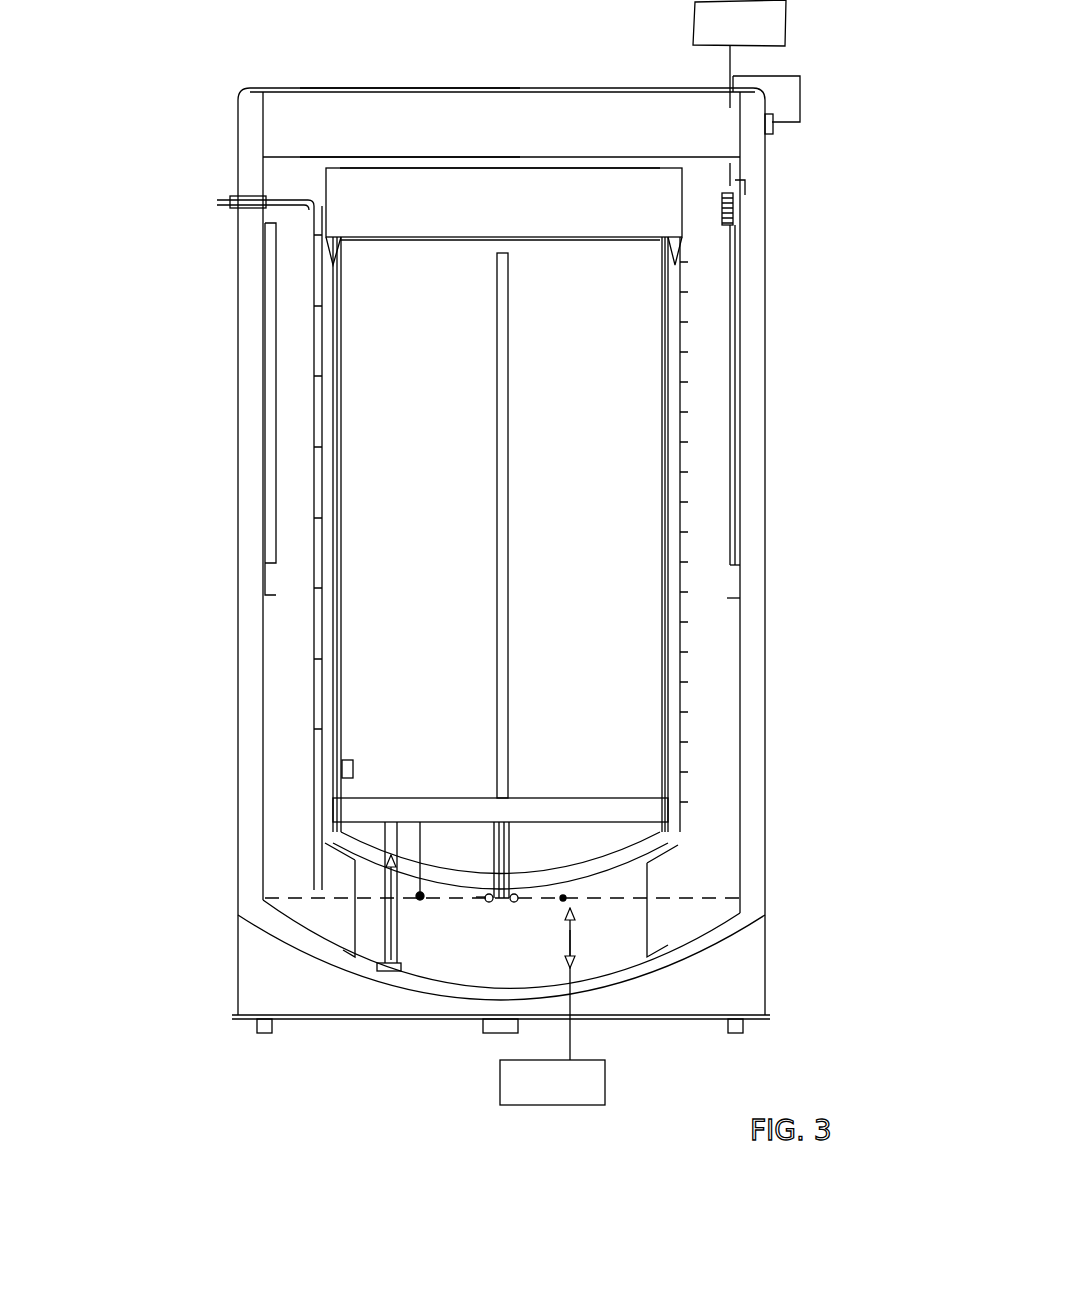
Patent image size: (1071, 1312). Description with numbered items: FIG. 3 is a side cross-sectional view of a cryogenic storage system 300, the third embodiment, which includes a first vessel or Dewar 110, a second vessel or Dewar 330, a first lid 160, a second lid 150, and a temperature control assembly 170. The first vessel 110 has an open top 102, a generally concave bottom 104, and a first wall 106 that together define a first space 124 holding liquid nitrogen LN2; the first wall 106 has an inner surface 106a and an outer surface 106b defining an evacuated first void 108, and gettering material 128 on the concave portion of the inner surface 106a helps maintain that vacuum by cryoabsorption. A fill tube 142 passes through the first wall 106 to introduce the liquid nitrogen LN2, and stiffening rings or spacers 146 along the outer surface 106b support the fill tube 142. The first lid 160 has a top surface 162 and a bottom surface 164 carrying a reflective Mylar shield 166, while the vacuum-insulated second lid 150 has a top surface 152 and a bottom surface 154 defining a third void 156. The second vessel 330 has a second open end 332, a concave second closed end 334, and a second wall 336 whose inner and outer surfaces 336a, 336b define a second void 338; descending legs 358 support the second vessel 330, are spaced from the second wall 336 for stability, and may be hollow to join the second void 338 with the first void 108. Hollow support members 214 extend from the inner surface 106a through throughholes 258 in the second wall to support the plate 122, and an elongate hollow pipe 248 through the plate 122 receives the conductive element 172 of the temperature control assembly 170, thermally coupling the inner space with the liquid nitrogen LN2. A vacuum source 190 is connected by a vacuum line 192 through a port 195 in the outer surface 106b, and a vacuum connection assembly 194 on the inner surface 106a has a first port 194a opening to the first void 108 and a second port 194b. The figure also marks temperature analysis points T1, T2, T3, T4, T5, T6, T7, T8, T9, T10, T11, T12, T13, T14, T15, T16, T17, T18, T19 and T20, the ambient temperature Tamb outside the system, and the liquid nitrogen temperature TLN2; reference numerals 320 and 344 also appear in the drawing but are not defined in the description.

The cryogenic storage system 300 is at (138, 63).
The first open end 102 is at (715, 172).
The first closed end 104 is at (398, 986).
The first wall 106 is at (752, 545).
The inner surface 106a is at (745, 566).
The outer surface 106b is at (765, 516).
The first void 108 is at (755, 598).
The first vessel 110 is at (782, 470).
The plate 122 is at (530, 820).
The first space 124 is at (700, 455).
The gettering material 128 is at (458, 987).
The fill tube 142 is at (234, 196).
The stiffening rings or spacers 146 is at (322, 616).
The second lid 150 is at (492, 211).
The top surface 152 is at (376, 170).
The bottom surface 154 is at (376, 237).
The third void 156 is at (468, 240).
The first lid 160 is at (486, 136).
The top surface 162 is at (316, 88).
The bottom surface 164 is at (306, 157).
The reflective Mylar shield 166 is at (300, 160).
The temperature control assembly 170 is at (348, 756).
The conductive element 172 is at (433, 891).
The vacuum source 190 is at (752, 30).
The vacuum line 192 is at (796, 76).
The vacuum connection assembly 194 is at (737, 216).
The first port 194a is at (746, 189).
The second port 194b is at (742, 280).
The port 195 is at (773, 132).
The support members 214 is at (400, 931).
The elongate hollow pipe 248 is at (510, 508).
The throughholes 258 is at (506, 906).
The storage can wall 320 is at (345, 449).
The second vessel 330 is at (690, 385).
The second open end 332 is at (598, 250).
The second closed end 334 is at (650, 836).
The second wall 336 is at (670, 661).
The inner surface 336a is at (682, 640).
The outer surface 336b is at (668, 677).
The second void 338 is at (683, 700).
The can interior space 344 is at (640, 776).
The descending legs 358 is at (356, 919).
The liquid nitrogen LN2 is at (712, 915).
The liquid nitrogen temperature TLN2 is at (552, 1006).
The ambient temperature Tamb is at (505, 86).
The temperature analysis point T1 is at (633, 155).
The temperature analysis point T2 is at (261, 235).
The temperature analysis point T3 is at (632, 240).
The temperature analysis point T4 is at (383, 796).
The temperature analysis point T5 is at (420, 892).
The temperature analysis point T6 is at (322, 235).
The temperature analysis point T7 is at (322, 306).
The temperature analysis point T8 is at (261, 306).
The temperature analysis point T9 is at (322, 376).
The temperature analysis point T10 is at (261, 376).
The temperature analysis point T11 is at (322, 447).
The temperature analysis point T12 is at (261, 447).
The temperature analysis point T13 is at (322, 518).
The temperature analysis point T14 is at (261, 518).
The temperature analysis point T15 is at (322, 588).
The temperature analysis point T16 is at (261, 588).
The temperature analysis point T17 is at (322, 659).
The temperature analysis point T18 is at (261, 659).
The temperature analysis point T19 is at (322, 729).
The temperature analysis point T20 is at (261, 730).